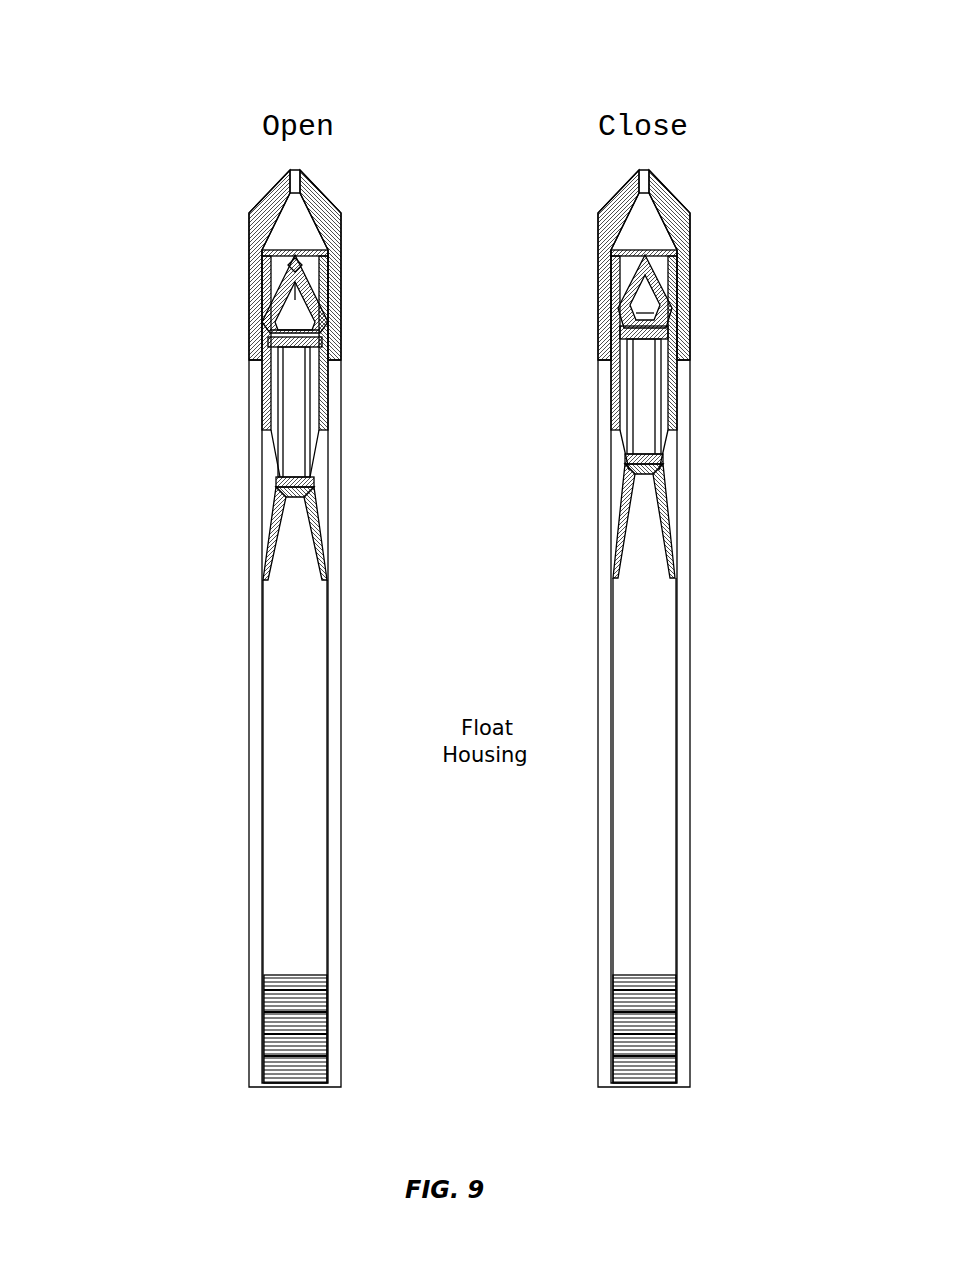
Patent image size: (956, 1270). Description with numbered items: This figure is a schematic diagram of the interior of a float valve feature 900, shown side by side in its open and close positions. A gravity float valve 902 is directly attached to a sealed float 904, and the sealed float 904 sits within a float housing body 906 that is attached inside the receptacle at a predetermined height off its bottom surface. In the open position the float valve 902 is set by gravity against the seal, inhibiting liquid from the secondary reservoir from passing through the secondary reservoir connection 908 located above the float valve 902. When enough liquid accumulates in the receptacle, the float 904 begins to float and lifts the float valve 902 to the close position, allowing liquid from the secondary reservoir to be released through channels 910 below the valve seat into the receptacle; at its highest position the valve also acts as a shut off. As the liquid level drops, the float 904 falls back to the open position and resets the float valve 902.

The float valve feature 900 is at (145, 100).
The float valve 902 is at (337, 322).
The sealed float 904 is at (283, 887).
The float housing body 906 is at (352, 721).
The secondary reservoir connection 908 is at (278, 268).
The channels 910 is at (685, 322).